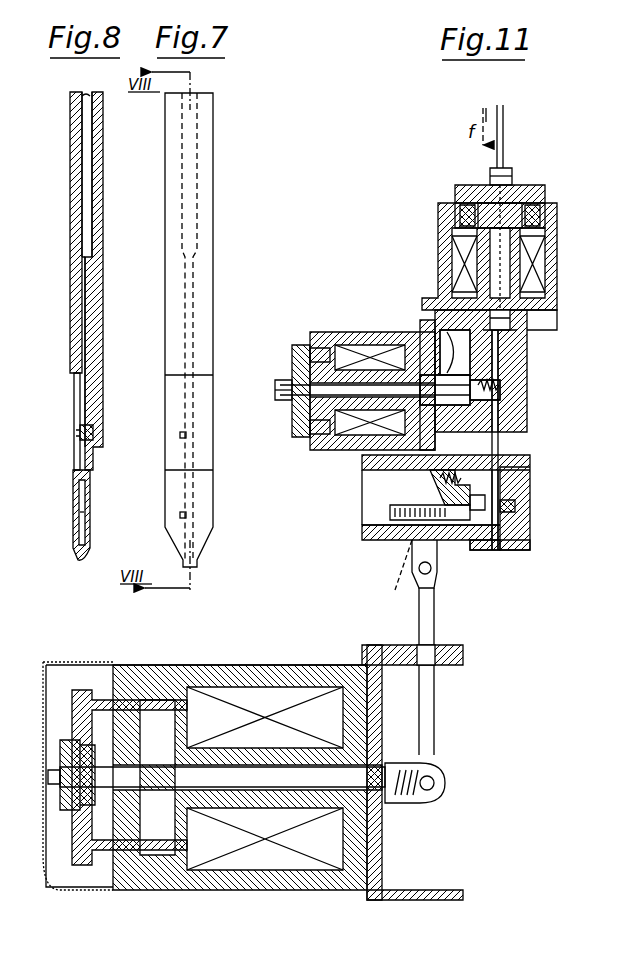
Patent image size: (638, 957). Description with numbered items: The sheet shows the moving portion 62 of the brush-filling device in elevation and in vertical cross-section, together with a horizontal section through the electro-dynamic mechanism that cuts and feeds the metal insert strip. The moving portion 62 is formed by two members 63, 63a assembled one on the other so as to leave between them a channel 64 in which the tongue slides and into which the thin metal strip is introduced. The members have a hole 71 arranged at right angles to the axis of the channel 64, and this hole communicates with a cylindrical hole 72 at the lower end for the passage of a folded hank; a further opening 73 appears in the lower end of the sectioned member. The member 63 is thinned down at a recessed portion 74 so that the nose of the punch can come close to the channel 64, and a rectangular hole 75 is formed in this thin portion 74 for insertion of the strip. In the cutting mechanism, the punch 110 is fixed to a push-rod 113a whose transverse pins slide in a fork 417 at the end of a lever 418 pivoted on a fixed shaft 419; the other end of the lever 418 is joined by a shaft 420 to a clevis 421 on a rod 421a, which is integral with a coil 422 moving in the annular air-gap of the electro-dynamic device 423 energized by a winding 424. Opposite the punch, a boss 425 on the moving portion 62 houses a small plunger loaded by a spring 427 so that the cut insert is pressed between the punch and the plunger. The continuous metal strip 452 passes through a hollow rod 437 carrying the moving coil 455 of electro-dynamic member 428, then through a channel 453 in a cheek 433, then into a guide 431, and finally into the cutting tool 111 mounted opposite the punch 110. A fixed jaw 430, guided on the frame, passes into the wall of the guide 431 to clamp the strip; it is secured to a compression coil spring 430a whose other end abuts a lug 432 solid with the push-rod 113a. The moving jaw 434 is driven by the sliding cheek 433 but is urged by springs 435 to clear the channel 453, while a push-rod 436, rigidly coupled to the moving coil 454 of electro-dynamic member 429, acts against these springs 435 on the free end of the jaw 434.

In FIG. 8, the moving portion 62 is at (72, 180).
In FIG. 7, the moving portion 62 is at (165, 357).
In FIG. 11, the moving portion 62 is at (505, 534).
In FIG. 8, the member 63 is at (70, 310).
In FIG. 8, the member 63a is at (95, 284).
In FIG. 8, the channel 64 is at (95, 340).
In FIG. 7, the hole 71 is at (180, 512).
In FIG. 8, the cylindrical hole 72 is at (75, 538).
In FIG. 8, the slot 73 is at (88, 526).
In FIG. 8, the thin portion 74 is at (73, 392).
In FIG. 8, the rectangular hole 75 is at (78, 432).
In FIG. 7, the rectangular hole 75 is at (180, 432).
In FIG. 11, the punch 110 is at (472, 553).
In FIG. 11, the cutting tool 111 is at (530, 500).
In FIG. 11, the push-rod 113a is at (395, 535).
In FIG. 11, the fork 417 is at (415, 545).
In FIG. 11, the lever 418 is at (435, 712).
In FIG. 11, the fixed shaft 419 is at (435, 582).
In FIG. 11, the shaft 420 is at (440, 783).
In FIG. 11, the clevis 421 is at (408, 800).
In FIG. 11, the rod 421a is at (125, 770).
In FIG. 11, the coil 422 is at (125, 862).
In FIG. 11, the electro-dynamic device 423 is at (247, 895).
In FIG. 11, the winding 424 is at (253, 700).
In FIG. 11, the boss 425 is at (515, 516).
In FIG. 11, the spring 427 is at (507, 552).
In FIG. 11, the electro-dynamic member 428 is at (557, 278).
In FIG. 11, the electro-dynamic member 429 is at (350, 332).
In FIG. 11, the jaw 430 is at (487, 552).
In FIG. 11, the compression coil spring 430a is at (430, 480).
In FIG. 11, the guide 431 is at (500, 443).
In FIG. 11, the lug 432 is at (425, 492).
In FIG. 11, the cheek 433 is at (527, 368).
In FIG. 11, the jaw 434 is at (527, 390).
In FIG. 11, the springs 435 is at (527, 408).
In FIG. 11, the push-rod 436 is at (410, 332).
In FIG. 11, the hollow rod 437 is at (552, 213).
In FIG. 11, the metal strip 452 is at (520, 129).
In FIG. 11, the channel 453 is at (527, 348).
In FIG. 11, the moving coil 454 is at (318, 345).
In FIG. 11, the moving coil 455 is at (540, 203).